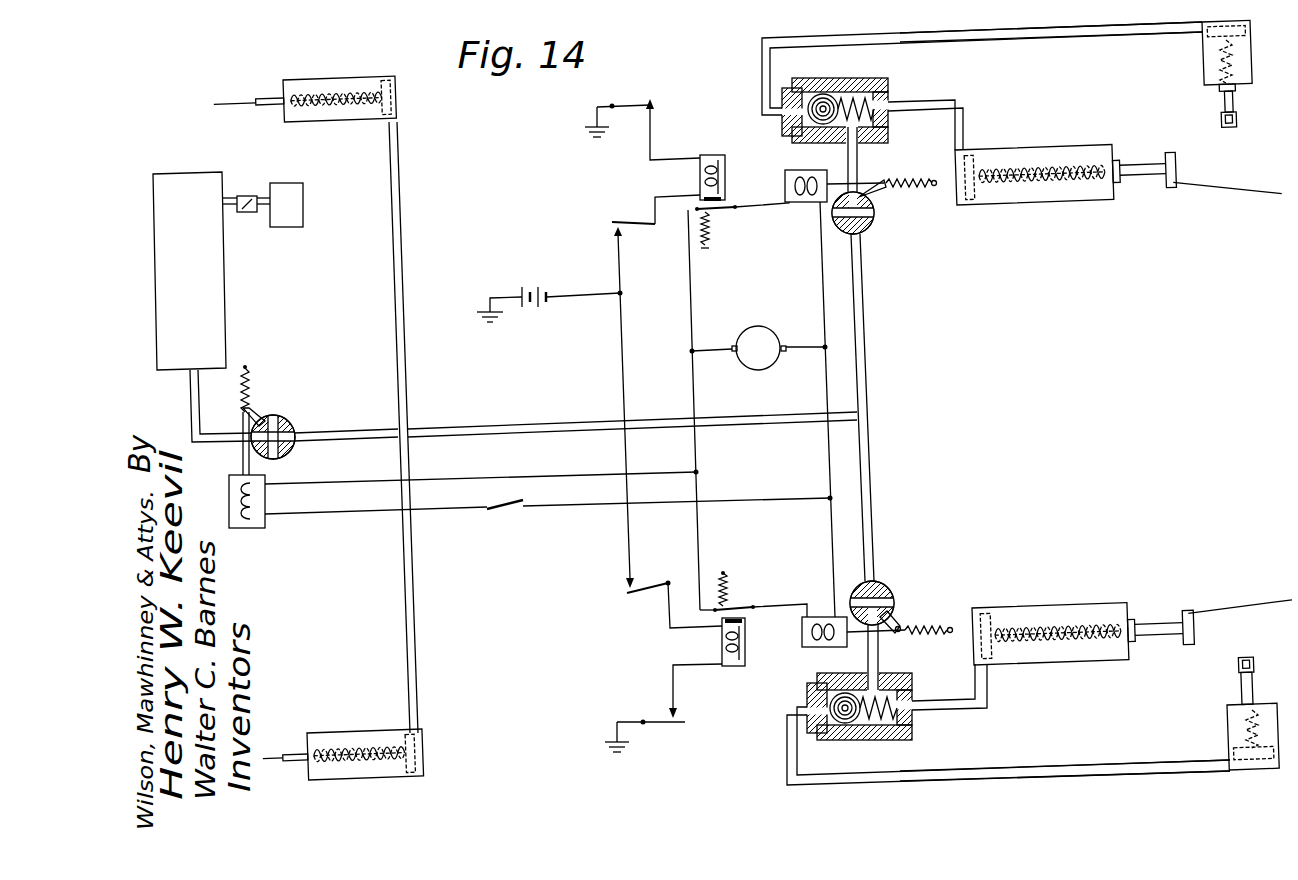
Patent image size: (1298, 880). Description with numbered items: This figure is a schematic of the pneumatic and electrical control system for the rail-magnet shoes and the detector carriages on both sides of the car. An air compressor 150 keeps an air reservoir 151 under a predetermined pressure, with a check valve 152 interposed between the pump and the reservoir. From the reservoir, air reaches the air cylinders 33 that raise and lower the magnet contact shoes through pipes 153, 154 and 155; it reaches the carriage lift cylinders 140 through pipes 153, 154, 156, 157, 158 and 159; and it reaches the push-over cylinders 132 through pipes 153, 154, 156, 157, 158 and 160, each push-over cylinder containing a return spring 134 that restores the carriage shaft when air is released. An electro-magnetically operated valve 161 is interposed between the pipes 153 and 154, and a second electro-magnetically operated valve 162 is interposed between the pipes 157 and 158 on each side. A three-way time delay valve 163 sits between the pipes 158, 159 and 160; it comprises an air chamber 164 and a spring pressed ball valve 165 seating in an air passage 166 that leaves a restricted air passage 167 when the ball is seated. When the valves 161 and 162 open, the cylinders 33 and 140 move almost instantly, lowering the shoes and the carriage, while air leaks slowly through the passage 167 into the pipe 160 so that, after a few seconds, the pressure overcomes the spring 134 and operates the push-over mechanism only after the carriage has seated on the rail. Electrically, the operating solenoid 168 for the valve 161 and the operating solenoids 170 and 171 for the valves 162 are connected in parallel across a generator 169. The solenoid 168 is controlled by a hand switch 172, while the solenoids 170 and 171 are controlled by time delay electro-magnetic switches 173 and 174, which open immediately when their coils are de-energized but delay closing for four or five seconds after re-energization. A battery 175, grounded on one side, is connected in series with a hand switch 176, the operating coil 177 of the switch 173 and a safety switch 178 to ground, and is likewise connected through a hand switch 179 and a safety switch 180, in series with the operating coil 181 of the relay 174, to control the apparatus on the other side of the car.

The air cylinder 33 is at (343, 79).
The push-over air cylinder 132 is at (1202, 50).
The return spring 134 is at (1220, 65).
The detector carriage lift cylinder 140 is at (1044, 200).
The air compressor 150 is at (290, 227).
The air reservoir 151 is at (192, 180).
The check valve 152 is at (246, 196).
The pipe 153 is at (190, 400).
The pipe 154 is at (346, 431).
The pipe 155 is at (401, 303).
The pipe 156 is at (559, 423).
The pipe 157 is at (868, 334).
The pipe 158 is at (858, 157).
The pipe 159 is at (941, 101).
The pipe 160 is at (1043, 39).
The electro-magnetically operated valve 161 is at (284, 420).
The electro-magnetically operated valve 162 is at (875, 218).
The three-way time delay valve 163 is at (889, 82).
The air chamber 164 is at (850, 96).
The spring pressed ball valve 165 is at (824, 94).
The air passage 166 is at (808, 84).
The restricted air passage 167 is at (826, 127).
The operating solenoid 168 is at (267, 528).
The generator 169 is at (760, 326).
The operating solenoid 170 is at (805, 202).
The operating solenoid 171 is at (818, 617).
The hand switch 172 is at (503, 513).
The time delay electro-magnetic switch 173 is at (716, 218).
The time delay electro-magnetic switch 174 is at (737, 605).
The battery 175 is at (531, 284).
The hand switch 176 is at (635, 222).
The operating coil 177 is at (712, 155).
The safety switch 178 is at (632, 103).
The hand switch 179 is at (632, 597).
The safety switch 180 is at (661, 721).
The operating coil 181 is at (747, 655).